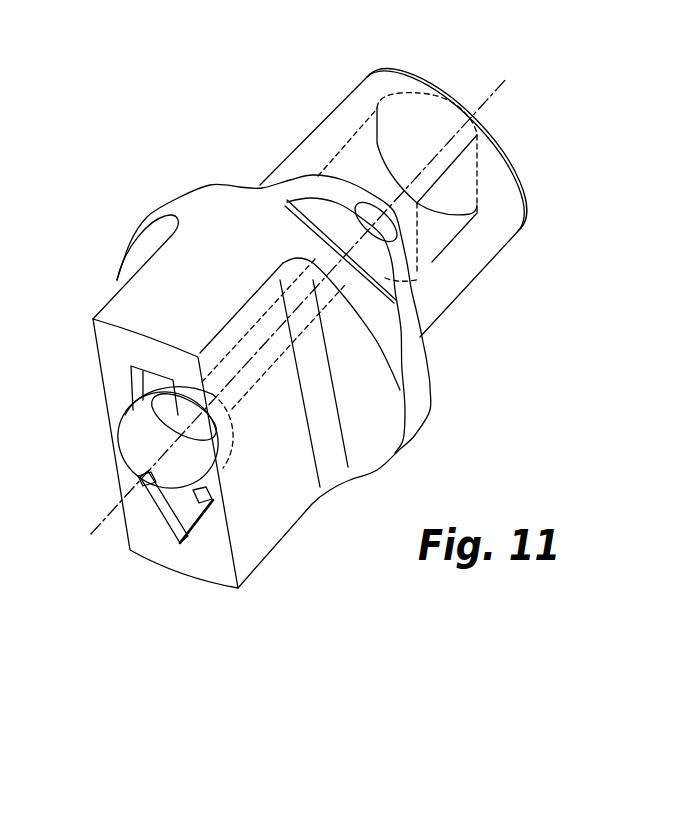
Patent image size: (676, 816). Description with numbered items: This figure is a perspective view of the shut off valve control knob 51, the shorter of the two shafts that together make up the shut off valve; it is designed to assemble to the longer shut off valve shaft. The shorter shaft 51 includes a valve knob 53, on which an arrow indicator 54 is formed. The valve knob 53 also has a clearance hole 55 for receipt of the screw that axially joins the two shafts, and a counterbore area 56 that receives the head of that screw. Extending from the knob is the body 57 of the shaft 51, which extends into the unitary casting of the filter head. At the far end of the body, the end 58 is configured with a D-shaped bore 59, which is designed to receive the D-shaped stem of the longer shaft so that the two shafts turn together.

The shut off valve control knob 51 is at (242, 158).
The valve knob 53 is at (172, 319).
The arrow indicator 54 is at (198, 505).
The clearance hole 55 is at (263, 367).
The counterbore area 56 is at (153, 430).
The body 57 is at (460, 262).
The end 58 is at (522, 166).
The D-shaped bore 59 is at (463, 98).